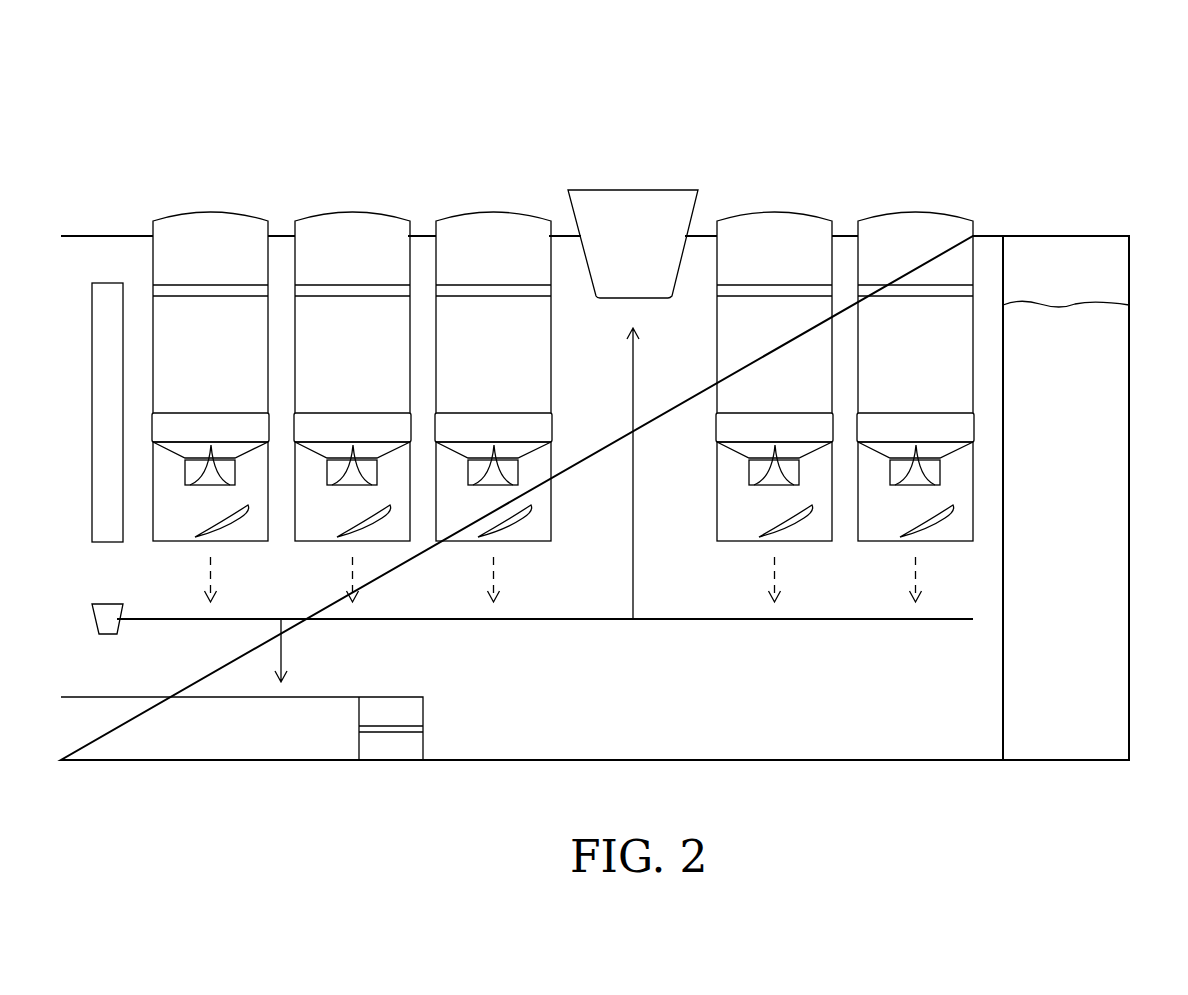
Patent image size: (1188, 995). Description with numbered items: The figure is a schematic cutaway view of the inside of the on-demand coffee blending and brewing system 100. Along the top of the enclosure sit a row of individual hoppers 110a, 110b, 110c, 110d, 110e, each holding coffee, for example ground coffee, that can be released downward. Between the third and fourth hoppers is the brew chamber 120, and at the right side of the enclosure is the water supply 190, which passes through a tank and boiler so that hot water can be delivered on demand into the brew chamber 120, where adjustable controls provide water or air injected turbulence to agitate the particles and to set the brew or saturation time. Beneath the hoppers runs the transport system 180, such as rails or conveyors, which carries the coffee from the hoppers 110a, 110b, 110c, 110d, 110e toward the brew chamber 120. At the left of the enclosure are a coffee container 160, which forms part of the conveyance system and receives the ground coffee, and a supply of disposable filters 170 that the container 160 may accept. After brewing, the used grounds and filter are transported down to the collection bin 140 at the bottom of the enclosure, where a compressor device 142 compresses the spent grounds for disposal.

The system 100 is at (1126, 94).
The hopper 110a is at (221, 205).
The hopper 110b is at (363, 205).
The hopper 110c is at (504, 204).
The hopper 110d is at (786, 205).
The hopper 110e is at (926, 205).
The brew chamber 120 is at (646, 183).
The collection bin 140 is at (217, 744).
The compressor device 142 is at (392, 738).
The coffee container 160 is at (116, 640).
The disposable filter 170 is at (116, 548).
The transport system 180 is at (762, 627).
The water supply 190 is at (1114, 364).